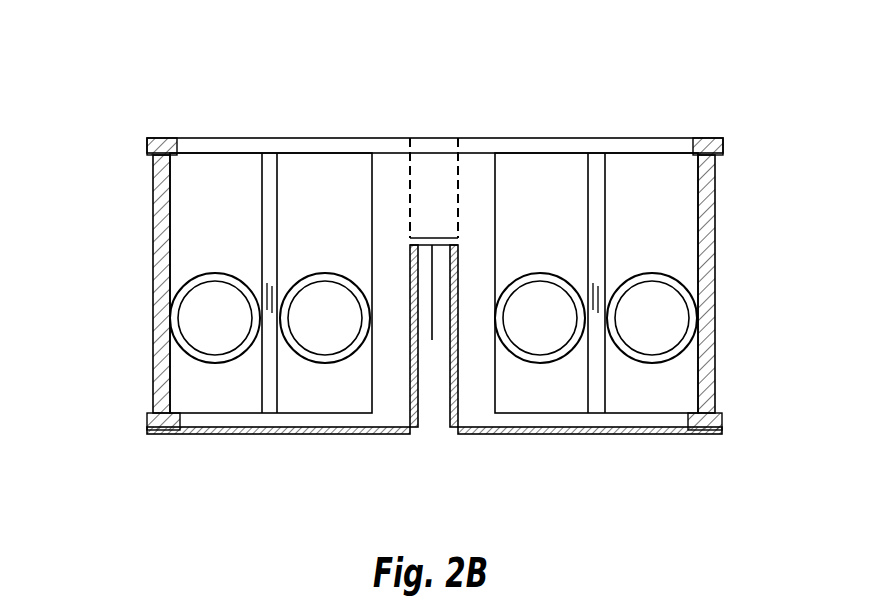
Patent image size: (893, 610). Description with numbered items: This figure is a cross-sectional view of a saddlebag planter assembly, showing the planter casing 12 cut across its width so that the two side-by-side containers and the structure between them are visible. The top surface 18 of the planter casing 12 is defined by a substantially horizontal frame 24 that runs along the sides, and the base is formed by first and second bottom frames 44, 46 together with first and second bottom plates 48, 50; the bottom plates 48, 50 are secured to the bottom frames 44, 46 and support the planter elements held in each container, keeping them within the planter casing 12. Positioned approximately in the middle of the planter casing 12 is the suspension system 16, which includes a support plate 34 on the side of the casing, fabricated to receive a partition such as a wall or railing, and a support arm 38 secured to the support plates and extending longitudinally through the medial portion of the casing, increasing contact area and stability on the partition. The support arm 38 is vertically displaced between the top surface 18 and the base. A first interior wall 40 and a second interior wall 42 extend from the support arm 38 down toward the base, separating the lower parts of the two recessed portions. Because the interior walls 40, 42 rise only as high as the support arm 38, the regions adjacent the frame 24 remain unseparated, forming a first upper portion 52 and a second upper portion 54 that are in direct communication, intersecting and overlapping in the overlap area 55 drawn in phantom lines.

The planter casing 12 is at (420, 265).
The suspension system 16 is at (450, 185).
The top surface 18 is at (222, 138).
The frame 24 is at (147, 148).
The support plate 34 is at (396, 160).
The support arm 38 is at (432, 340).
The first interior wall 40 is at (419, 414).
The second interior wall 42 is at (470, 436).
The first bottom frame 44 is at (156, 432).
The second bottom frame 46 is at (708, 433).
The first bottom plate 48 is at (314, 434).
The second bottom plate 50 is at (605, 434).
The first upper portion 52 is at (358, 196).
The second upper portion 54 is at (508, 200).
The overlap area 55 is at (437, 155).